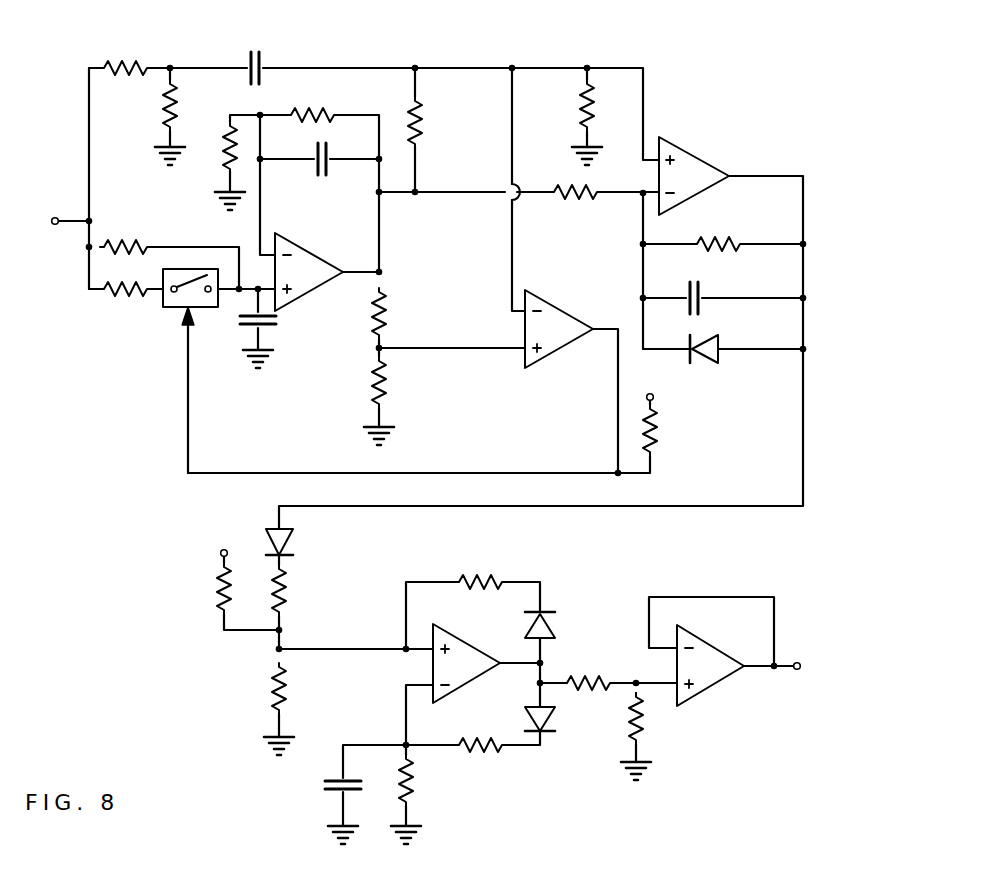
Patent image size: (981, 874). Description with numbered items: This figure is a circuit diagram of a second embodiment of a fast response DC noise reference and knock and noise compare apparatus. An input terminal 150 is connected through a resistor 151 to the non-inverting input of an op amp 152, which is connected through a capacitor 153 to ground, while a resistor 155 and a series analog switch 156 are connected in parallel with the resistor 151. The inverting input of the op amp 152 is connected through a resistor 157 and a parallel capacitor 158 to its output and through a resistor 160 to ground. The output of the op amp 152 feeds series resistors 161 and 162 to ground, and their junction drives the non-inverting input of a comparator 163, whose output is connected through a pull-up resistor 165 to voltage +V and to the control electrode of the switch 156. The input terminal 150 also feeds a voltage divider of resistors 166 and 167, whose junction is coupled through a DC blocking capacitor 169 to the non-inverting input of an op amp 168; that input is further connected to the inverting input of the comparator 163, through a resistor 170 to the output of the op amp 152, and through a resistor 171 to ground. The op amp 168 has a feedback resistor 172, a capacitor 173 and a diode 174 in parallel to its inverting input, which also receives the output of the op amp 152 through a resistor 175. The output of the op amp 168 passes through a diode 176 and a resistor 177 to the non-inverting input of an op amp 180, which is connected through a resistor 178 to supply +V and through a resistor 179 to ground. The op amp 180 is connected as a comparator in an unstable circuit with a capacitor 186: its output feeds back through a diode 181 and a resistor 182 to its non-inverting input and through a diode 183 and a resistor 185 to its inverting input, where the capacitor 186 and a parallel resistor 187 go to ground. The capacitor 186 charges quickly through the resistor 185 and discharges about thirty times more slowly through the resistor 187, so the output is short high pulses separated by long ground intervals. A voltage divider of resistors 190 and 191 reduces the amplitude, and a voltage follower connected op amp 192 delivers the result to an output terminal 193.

The input terminal 150 is at (57, 215).
The resistor 151 is at (113, 242).
The op amp 152 is at (315, 258).
The capacitor 153 is at (272, 322).
The resistor 155 is at (130, 300).
The analog switch 156 is at (185, 306).
The resistor 157 is at (325, 118).
The capacitor 158 is at (317, 172).
The resistor 160 is at (227, 133).
The resistor 161 is at (388, 302).
The resistor 162 is at (385, 395).
The comparator 163 is at (562, 325).
The pull-up resistor 165 is at (655, 445).
The resistor 166 is at (143, 62).
The resistor 167 is at (165, 102).
The op amp 168 is at (697, 165).
The DC blocking capacitor 169 is at (262, 60).
The resistor 170 is at (423, 138).
The resistor 171 is at (582, 108).
The feedback resistor 172 is at (733, 237).
The capacitor 173 is at (702, 292).
The diode 174 is at (718, 347).
The resistor 175 is at (577, 202).
The diode 176 is at (293, 538).
The resistor 177 is at (288, 598).
The resistor 178 is at (220, 597).
The resistor 179 is at (273, 697).
The op amp 180 is at (433, 662).
The diode 181 is at (547, 628).
The resistor 182 is at (475, 578).
The diode 183 is at (553, 717).
The resistor 185 is at (480, 752).
The capacitor 186 is at (337, 787).
The resistor 187 is at (413, 770).
The resistor 190 is at (580, 668).
The resistor 191 is at (640, 728).
The op amp 192 is at (717, 673).
The output terminal 193 is at (798, 660).